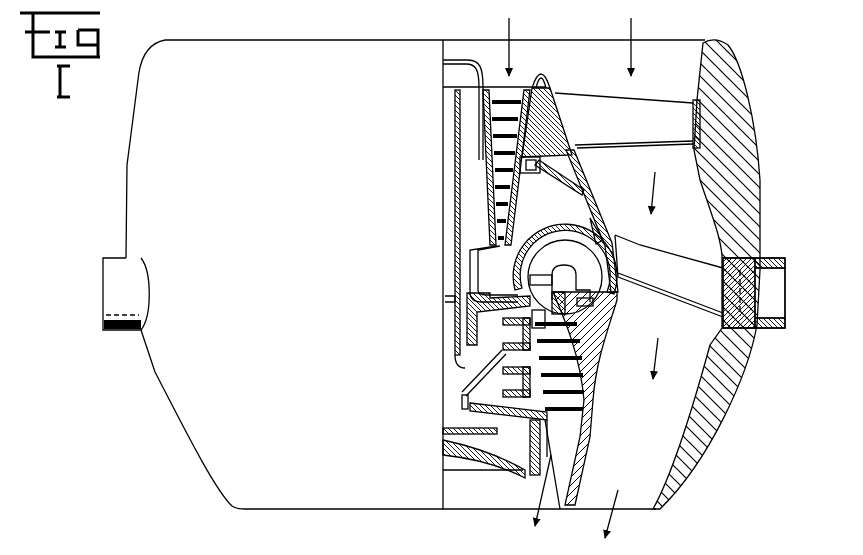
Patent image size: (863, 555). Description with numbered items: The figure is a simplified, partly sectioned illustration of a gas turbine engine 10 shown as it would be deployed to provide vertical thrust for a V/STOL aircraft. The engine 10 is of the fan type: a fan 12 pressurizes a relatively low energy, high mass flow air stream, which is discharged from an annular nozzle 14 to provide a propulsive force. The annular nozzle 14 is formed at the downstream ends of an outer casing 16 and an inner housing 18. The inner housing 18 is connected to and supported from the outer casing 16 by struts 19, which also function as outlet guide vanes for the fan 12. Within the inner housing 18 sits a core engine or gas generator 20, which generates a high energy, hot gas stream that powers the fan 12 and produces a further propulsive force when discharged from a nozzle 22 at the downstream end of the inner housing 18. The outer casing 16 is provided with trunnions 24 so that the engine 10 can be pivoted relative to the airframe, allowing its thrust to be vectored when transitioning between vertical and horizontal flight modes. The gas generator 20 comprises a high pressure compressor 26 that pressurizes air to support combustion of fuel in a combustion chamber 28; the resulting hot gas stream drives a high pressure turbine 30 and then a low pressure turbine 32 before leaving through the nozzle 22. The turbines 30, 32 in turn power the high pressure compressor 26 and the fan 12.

The engine 10 is at (116, 179).
The fan 12 is at (668, 53).
The annular nozzle 14 is at (631, 513).
The outer casing 16 is at (702, 386).
The inner housing 18 is at (588, 192).
The struts 19 is at (697, 248).
The core engine 20 is at (558, 213).
The nozzle 22 is at (518, 490).
The trunnions 24 is at (112, 248).
The high pressure compressor 26 is at (476, 175).
The combustion chamber 28 is at (586, 276).
The high pressure turbine 30 is at (495, 311).
The low pressure turbine 32 is at (510, 373).